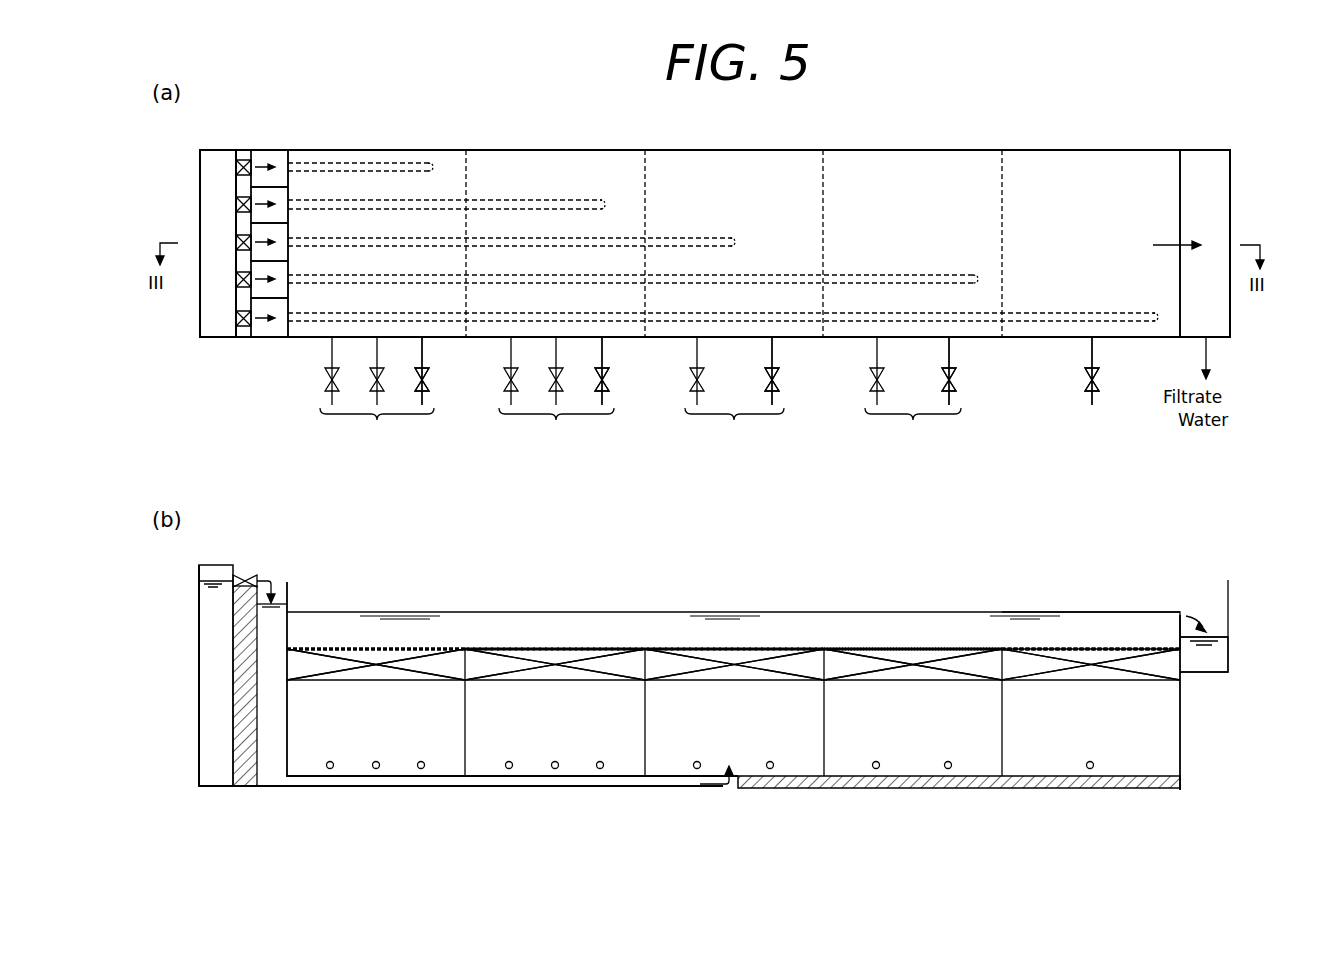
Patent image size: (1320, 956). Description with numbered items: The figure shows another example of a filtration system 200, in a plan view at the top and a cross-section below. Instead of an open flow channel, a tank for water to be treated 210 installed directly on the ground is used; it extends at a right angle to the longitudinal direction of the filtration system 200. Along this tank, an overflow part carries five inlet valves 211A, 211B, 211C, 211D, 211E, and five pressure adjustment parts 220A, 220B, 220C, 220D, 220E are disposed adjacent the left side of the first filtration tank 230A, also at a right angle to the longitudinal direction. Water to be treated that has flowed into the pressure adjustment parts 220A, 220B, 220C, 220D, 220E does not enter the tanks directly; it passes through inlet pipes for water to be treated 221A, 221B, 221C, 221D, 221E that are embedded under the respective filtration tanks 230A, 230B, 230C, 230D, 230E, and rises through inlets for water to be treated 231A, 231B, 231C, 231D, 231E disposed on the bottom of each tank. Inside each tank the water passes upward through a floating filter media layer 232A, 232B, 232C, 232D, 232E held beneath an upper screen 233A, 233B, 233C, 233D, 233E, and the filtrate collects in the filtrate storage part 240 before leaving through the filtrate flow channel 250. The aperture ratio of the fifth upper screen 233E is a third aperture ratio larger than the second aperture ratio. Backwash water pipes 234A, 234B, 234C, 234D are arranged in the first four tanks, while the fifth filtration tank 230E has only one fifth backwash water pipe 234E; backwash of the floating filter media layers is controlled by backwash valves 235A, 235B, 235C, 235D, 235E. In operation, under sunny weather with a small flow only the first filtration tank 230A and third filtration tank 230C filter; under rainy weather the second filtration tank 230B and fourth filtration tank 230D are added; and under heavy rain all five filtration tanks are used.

The filtration system 200 is at (990, 106).
The tank for water to be treated 210 is at (216, 145).
The inlet valve 211A is at (231, 165).
The inlet valve 211B is at (231, 240).
The inlet valve 211C is at (231, 204).
The inlet valve 211D is at (231, 280).
The inlet valve 211E is at (231, 319).
The pressure adjustment part 220A is at (270, 147).
The pressure adjustment part 220B is at (276, 232).
The pressure adjustment part 220C is at (276, 195).
The pressure adjustment part 220D is at (276, 270).
The pressure adjustment part 220E is at (276, 307).
The inlet pipe for water to be treated 221A is at (367, 157).
The inlet pipe for water to be treated 221B is at (682, 237).
The inlet pipe for water to be treated 221C is at (527, 198).
The inlet pipe for water to be treated 221D is at (892, 277).
The inlet pipe for water to be treated 221E is at (1088, 313).
The inlet for water to be treated 231A is at (428, 157).
The inlet for water to be treated 231B is at (738, 237).
The inlet for water to be treated 231C is at (600, 198).
The inlet for water to be treated 231D is at (973, 278).
The inlet for water to be treated 231E is at (1153, 315).
The first filtration tank 230A is at (430, 298).
The second filtration tank 230B is at (776, 302).
The third filtration tank 230C is at (600, 298).
The fourth filtration tank 230D is at (955, 302).
The fifth filtration tank 230E is at (1044, 298).
The floating filter media layer 232A is at (312, 664).
The floating filter media layer 232B is at (664, 664).
The floating filter media layer 232C is at (492, 664).
The floating filter media layer 232D is at (850, 664).
The floating filter media layer 232E is at (1027, 664).
The upper screen 233A is at (393, 646).
The upper screen 233B is at (748, 647).
The upper screen 233C is at (572, 647).
The upper screen 233D is at (925, 647).
The fifth upper screen 233E is at (1100, 647).
The backwash water pipe 234A is at (376, 806).
The backwash water pipe 234B is at (778, 810).
The backwash water pipe 234C is at (555, 806).
The backwash water pipe 234D is at (912, 806).
The fifth backwash water pipe 234E is at (1090, 392).
The backwash valve 235A is at (424, 388).
The backwash valve 235B is at (774, 388).
The backwash valve 235C is at (604, 388).
The backwash valve 235D is at (951, 388).
The backwash valve 235E is at (1094, 392).
The filtrate storage part 240 is at (1140, 627).
The filtrate flow channel 250 is at (1197, 188).